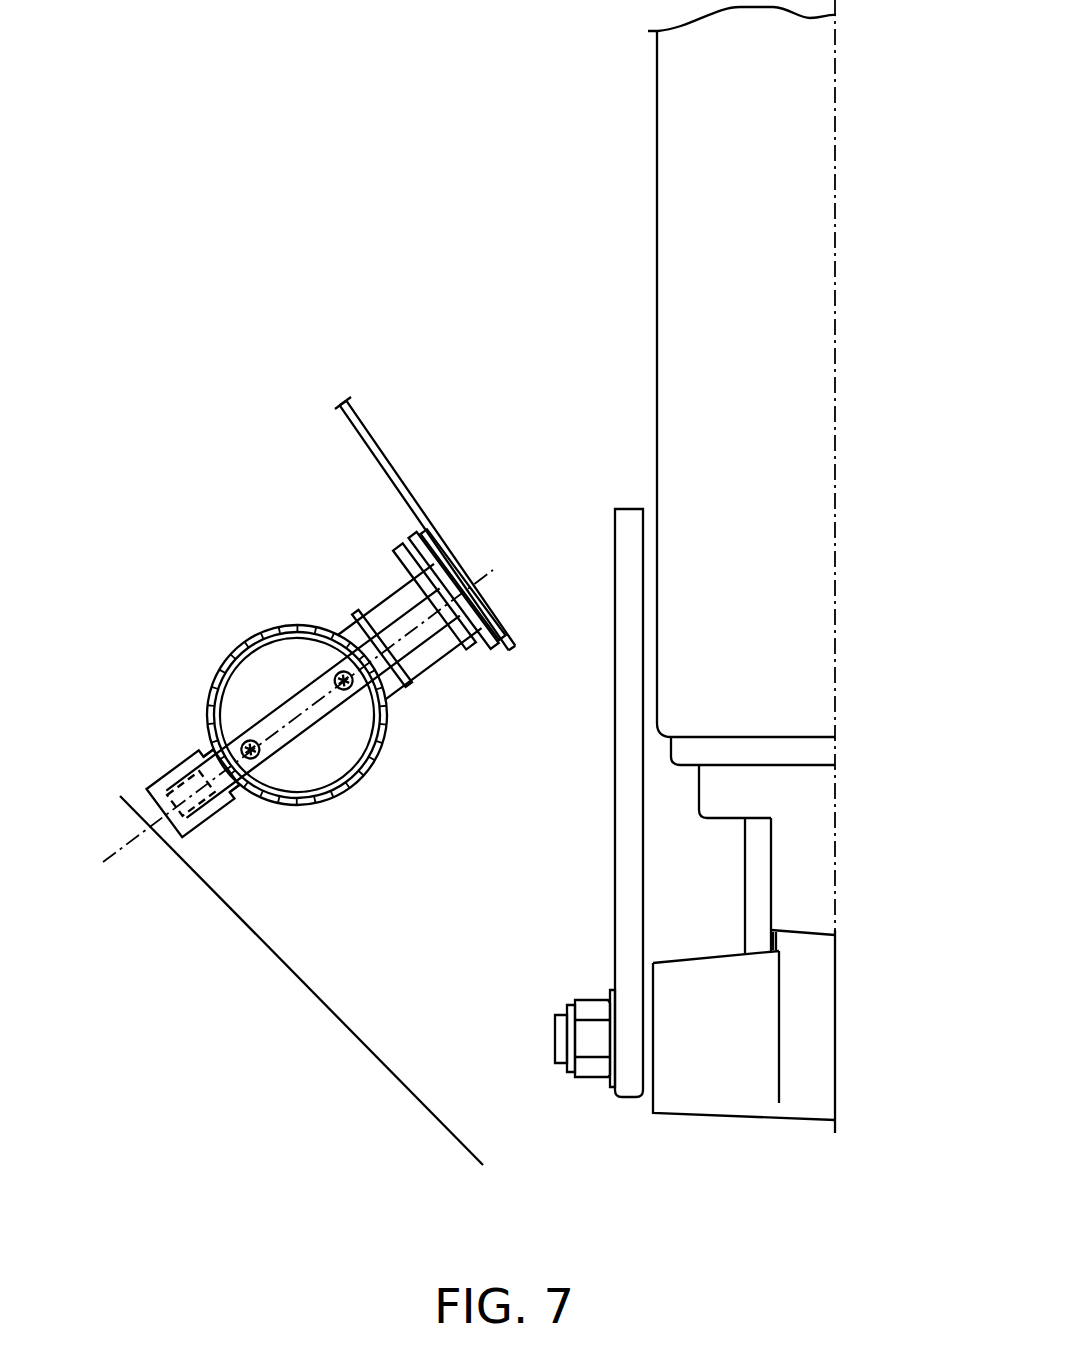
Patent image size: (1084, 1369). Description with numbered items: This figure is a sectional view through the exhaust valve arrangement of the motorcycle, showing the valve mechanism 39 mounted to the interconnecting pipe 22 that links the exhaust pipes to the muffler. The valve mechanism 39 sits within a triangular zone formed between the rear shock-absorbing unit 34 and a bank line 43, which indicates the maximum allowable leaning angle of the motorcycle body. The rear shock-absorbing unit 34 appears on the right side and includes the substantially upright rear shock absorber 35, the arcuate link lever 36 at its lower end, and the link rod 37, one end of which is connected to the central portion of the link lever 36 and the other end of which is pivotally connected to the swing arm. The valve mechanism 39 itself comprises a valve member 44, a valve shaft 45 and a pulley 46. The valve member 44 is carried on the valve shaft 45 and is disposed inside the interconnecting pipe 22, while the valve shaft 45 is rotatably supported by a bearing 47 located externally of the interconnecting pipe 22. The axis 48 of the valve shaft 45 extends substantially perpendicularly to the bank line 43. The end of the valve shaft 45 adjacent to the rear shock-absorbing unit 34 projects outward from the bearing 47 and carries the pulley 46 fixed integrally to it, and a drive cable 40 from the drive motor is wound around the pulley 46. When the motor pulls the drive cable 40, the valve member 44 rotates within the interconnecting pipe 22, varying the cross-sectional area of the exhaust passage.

The interconnecting pipe 22 is at (270, 635).
The rear shock-absorbing unit 34 is at (647, 319).
The rear shock absorber 35 is at (672, 380).
The link lever 36 is at (697, 1098).
The link rod 37 is at (628, 553).
The valve mechanism 39 is at (396, 708).
The drive cable 40 is at (383, 462).
The bank line 43 is at (327, 1015).
The valve member 44 is at (307, 772).
The valve shaft 45 is at (452, 665).
The pulley 46 is at (458, 555).
The bearing 47 is at (180, 748).
The axis 48 is at (128, 866).